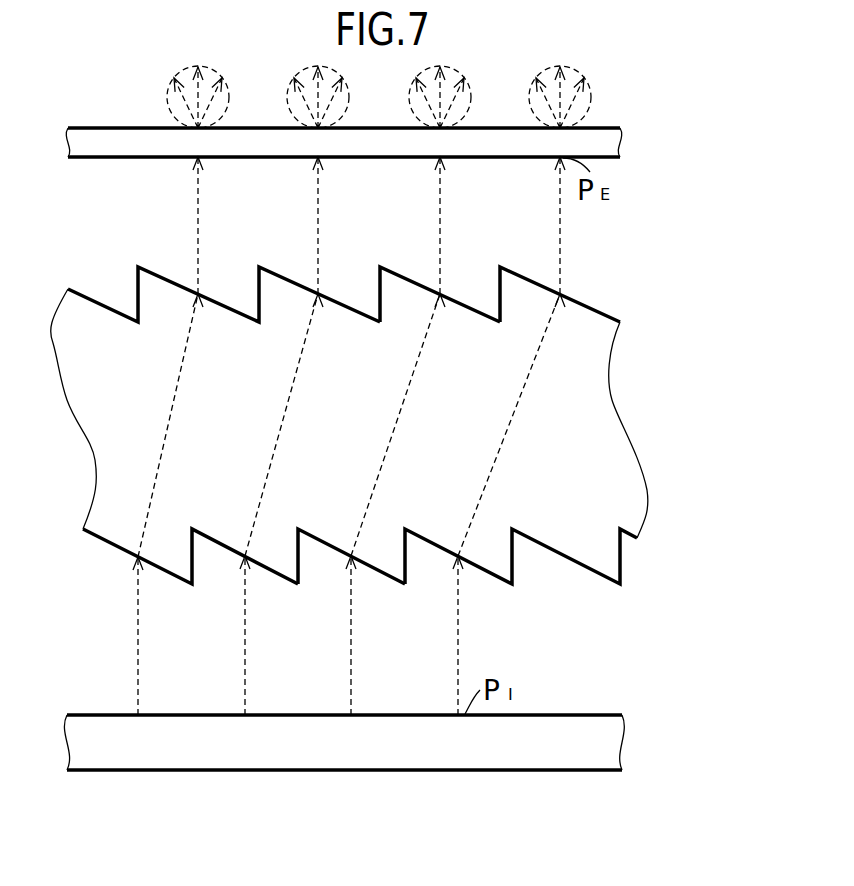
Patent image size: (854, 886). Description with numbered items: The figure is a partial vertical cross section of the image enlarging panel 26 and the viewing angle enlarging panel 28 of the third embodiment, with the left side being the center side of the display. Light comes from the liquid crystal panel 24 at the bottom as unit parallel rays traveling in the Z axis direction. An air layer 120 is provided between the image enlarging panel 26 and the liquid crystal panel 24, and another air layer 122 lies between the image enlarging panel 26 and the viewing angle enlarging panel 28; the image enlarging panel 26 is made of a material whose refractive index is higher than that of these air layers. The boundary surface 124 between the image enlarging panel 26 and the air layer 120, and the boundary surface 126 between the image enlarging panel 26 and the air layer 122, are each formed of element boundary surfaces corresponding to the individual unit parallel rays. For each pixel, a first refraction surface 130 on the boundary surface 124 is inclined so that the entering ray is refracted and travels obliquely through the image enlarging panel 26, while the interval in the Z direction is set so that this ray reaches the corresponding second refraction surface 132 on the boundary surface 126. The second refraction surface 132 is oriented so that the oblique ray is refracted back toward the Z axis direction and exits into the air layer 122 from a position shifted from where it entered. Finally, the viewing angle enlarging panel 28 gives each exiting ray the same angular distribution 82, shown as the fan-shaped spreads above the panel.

The liquid crystal panel 24 is at (623, 742).
The image enlarging panel 26 is at (385, 427).
The viewing angle enlarging panel 28 is at (621, 141).
The angular distribution 82 is at (457, 70).
The air layer 120 is at (598, 661).
The air layer 122 is at (598, 233).
The boundary surface 124 is at (401, 589).
The boundary surface 126 is at (391, 265).
The first refraction surface 130 is at (392, 580).
The second refraction surface 132 is at (513, 268).